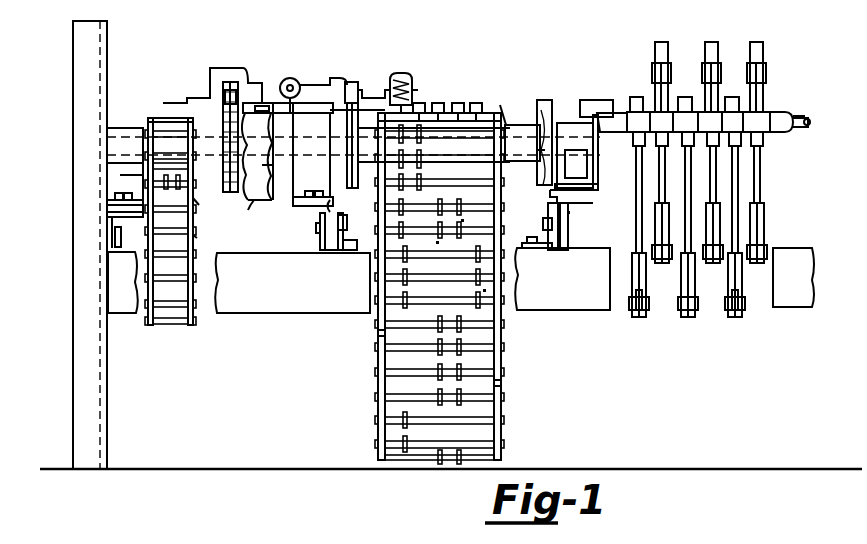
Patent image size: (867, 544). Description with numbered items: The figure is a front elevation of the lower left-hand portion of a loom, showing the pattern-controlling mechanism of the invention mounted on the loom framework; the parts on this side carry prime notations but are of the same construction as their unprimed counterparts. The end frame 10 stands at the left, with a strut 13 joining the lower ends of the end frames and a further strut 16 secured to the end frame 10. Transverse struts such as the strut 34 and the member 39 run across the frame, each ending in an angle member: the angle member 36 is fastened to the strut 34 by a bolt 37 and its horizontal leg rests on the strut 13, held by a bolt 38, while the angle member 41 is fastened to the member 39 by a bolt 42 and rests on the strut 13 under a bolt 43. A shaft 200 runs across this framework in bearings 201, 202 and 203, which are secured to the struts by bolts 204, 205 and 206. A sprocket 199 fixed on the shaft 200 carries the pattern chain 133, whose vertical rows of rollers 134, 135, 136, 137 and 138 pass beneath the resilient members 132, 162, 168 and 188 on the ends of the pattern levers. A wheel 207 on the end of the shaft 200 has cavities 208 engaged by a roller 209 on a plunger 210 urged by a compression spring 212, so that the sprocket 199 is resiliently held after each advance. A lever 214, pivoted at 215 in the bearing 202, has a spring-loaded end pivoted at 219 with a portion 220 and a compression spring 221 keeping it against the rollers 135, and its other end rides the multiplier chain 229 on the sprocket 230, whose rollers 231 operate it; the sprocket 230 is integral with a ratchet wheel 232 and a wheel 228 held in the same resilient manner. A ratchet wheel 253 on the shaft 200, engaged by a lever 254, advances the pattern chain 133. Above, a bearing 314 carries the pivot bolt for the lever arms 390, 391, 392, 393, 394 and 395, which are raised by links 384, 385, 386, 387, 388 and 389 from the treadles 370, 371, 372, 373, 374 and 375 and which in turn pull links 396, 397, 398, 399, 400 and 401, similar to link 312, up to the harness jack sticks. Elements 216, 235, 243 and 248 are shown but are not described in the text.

The end frame 10 is at (73, 58).
The strut 13 is at (108, 280).
The strut 16 is at (110, 216).
The strut 34 is at (567, 216).
The angle member 36 is at (553, 250).
The bolt 37 is at (569, 220).
The bolt 38 is at (537, 240).
The member 39 is at (320, 244).
The angle member 41 is at (313, 250).
The bolt 42 is at (316, 229).
The bolt 43 is at (337, 240).
The resilient member 132 is at (420, 103).
The pattern chain 133 is at (506, 379).
The rollers 134 is at (424, 172).
The rollers 135 is at (378, 334).
The rollers 136 is at (448, 237).
The rollers 137 is at (455, 212).
The rollers 138 is at (487, 285).
The resilient member 162 is at (440, 103).
The resilient member 168 is at (460, 103).
The resilient member 188 is at (478, 103).
The sprocket 199 is at (505, 110).
The shaft 200 is at (522, 131).
The bearing 201 is at (128, 132).
The bearing 202 is at (303, 159).
The bearing 203 is at (593, 151).
The bolts 204 is at (107, 188).
The bolts 205 is at (318, 191).
The bolts 206 is at (590, 161).
The wheel 207 is at (550, 100).
The cavities 208 is at (546, 160).
The roller 209 is at (250, 118).
The plunger 210 is at (295, 108).
The compression spring 212 is at (612, 122).
The lever 214 is at (190, 104).
The pivot 215 is at (279, 99).
The pivot 216 is at (294, 78).
The pivot 219 is at (418, 90).
The portion 220 is at (400, 73).
The compression spring 221 is at (358, 95).
The wheel 228 is at (265, 208).
The multiplier chain 229 is at (194, 236).
The sprocket 230 is at (157, 118).
The rollers 231 is at (123, 173).
The ratchet wheel 232 is at (233, 202).
The gear hub 235 is at (232, 88).
The pin 243 is at (300, 96).
The bar 248 is at (363, 108).
The ratchet wheel 253 is at (351, 206).
The lever 254 is at (347, 82).
The link 312 is at (806, 118).
The bearing 314 is at (601, 179).
The treadle 370 is at (764, 245).
The treadle 371 is at (737, 318).
The treadle 372 is at (716, 263).
The treadle 373 is at (694, 318).
The treadle 374 is at (660, 263).
The treadle 375 is at (636, 318).
The link 384 is at (762, 191).
The link 385 is at (745, 306).
The link 386 is at (712, 183).
The link 387 is at (647, 308).
The link 388 is at (660, 193).
The link 389 is at (633, 219).
The lever arm 390 is at (777, 122).
The lever arm 391 is at (733, 122).
The lever arm 392 is at (710, 122).
The lever arm 393 is at (685, 122).
The lever arm 394 is at (662, 122).
The lever arm 395 is at (639, 122).
The link 396 is at (760, 42).
The link 397 is at (735, 97).
The link 398 is at (710, 42).
The link 399 is at (688, 97).
The link 400 is at (658, 42).
The link 401 is at (637, 97).